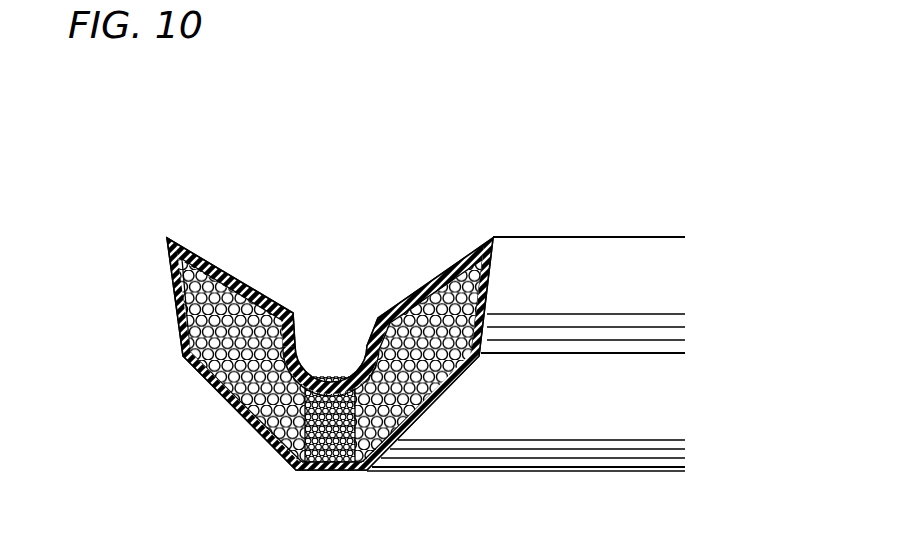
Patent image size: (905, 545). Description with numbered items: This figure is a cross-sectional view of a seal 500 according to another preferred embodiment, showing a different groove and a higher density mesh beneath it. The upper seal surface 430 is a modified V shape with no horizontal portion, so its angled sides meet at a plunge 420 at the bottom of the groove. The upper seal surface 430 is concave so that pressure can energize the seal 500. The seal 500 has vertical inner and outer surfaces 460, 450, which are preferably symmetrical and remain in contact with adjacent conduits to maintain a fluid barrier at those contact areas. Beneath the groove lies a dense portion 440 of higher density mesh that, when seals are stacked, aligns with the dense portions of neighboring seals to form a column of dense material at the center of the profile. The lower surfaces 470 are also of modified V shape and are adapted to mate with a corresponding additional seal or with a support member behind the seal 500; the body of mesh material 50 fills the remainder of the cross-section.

The seal 500 is at (303, 198).
The honeycomb core 50 is at (220, 323).
The plunge 420 is at (363, 350).
The upper seal surface 430 is at (207, 262).
The dense portion 440 is at (357, 421).
The outer surface 450 is at (172, 267).
The inner surface 460 is at (487, 282).
The lower surfaces 470 is at (330, 470).